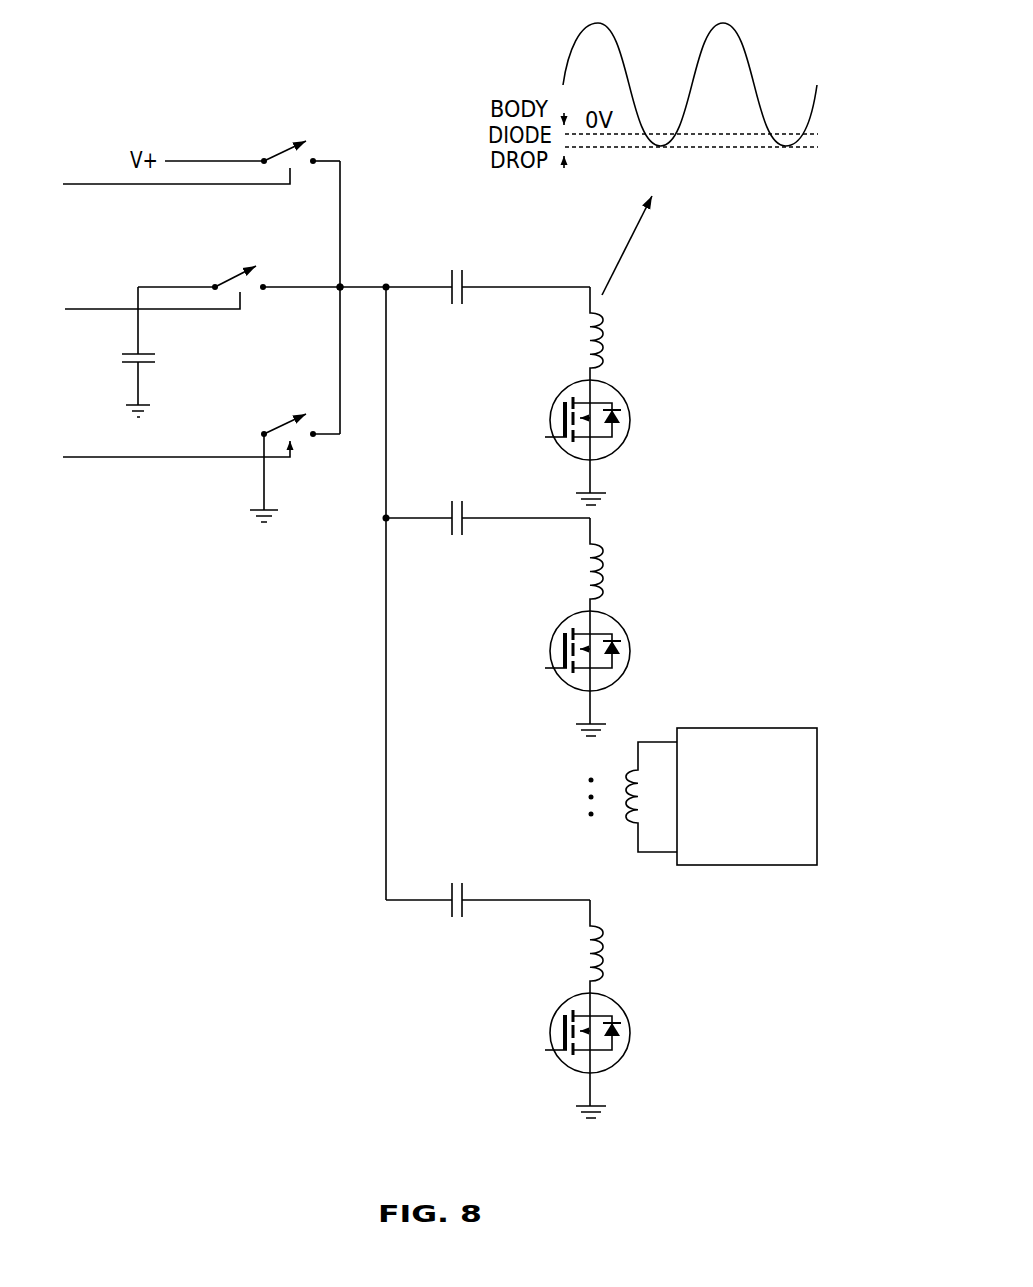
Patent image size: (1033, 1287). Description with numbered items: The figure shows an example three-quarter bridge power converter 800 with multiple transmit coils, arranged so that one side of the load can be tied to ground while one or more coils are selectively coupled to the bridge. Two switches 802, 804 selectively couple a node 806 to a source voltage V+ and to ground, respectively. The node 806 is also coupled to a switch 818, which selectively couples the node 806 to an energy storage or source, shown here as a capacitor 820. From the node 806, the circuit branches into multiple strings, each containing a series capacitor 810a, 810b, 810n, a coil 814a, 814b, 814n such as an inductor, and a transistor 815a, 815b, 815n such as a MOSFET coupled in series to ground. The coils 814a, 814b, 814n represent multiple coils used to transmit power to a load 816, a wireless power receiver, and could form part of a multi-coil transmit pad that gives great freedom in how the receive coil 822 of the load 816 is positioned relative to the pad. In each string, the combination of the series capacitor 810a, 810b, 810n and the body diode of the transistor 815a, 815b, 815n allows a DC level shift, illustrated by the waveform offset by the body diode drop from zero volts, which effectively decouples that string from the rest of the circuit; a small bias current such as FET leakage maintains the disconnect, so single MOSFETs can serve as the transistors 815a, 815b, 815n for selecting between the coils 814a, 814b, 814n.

The three-quarter bridge power converter 800 is at (250, 915).
The switch 802 is at (289, 147).
The switch 804 is at (286, 427).
The node 806 is at (336, 290).
The series capacitor 810a is at (463, 283).
The series capacitor 810b is at (488, 504).
The series capacitor 810n is at (488, 886).
The coil 814a is at (590, 341).
The coil 814b is at (561, 576).
The coil 814n is at (561, 958).
The transistor 815a is at (551, 420).
The transistor 815b is at (550, 673).
The transistor 815n is at (550, 1055).
The load 816 is at (746, 727).
The switch 818 is at (233, 280).
The capacitor 820 is at (146, 365).
The receive coil 822 is at (631, 823).